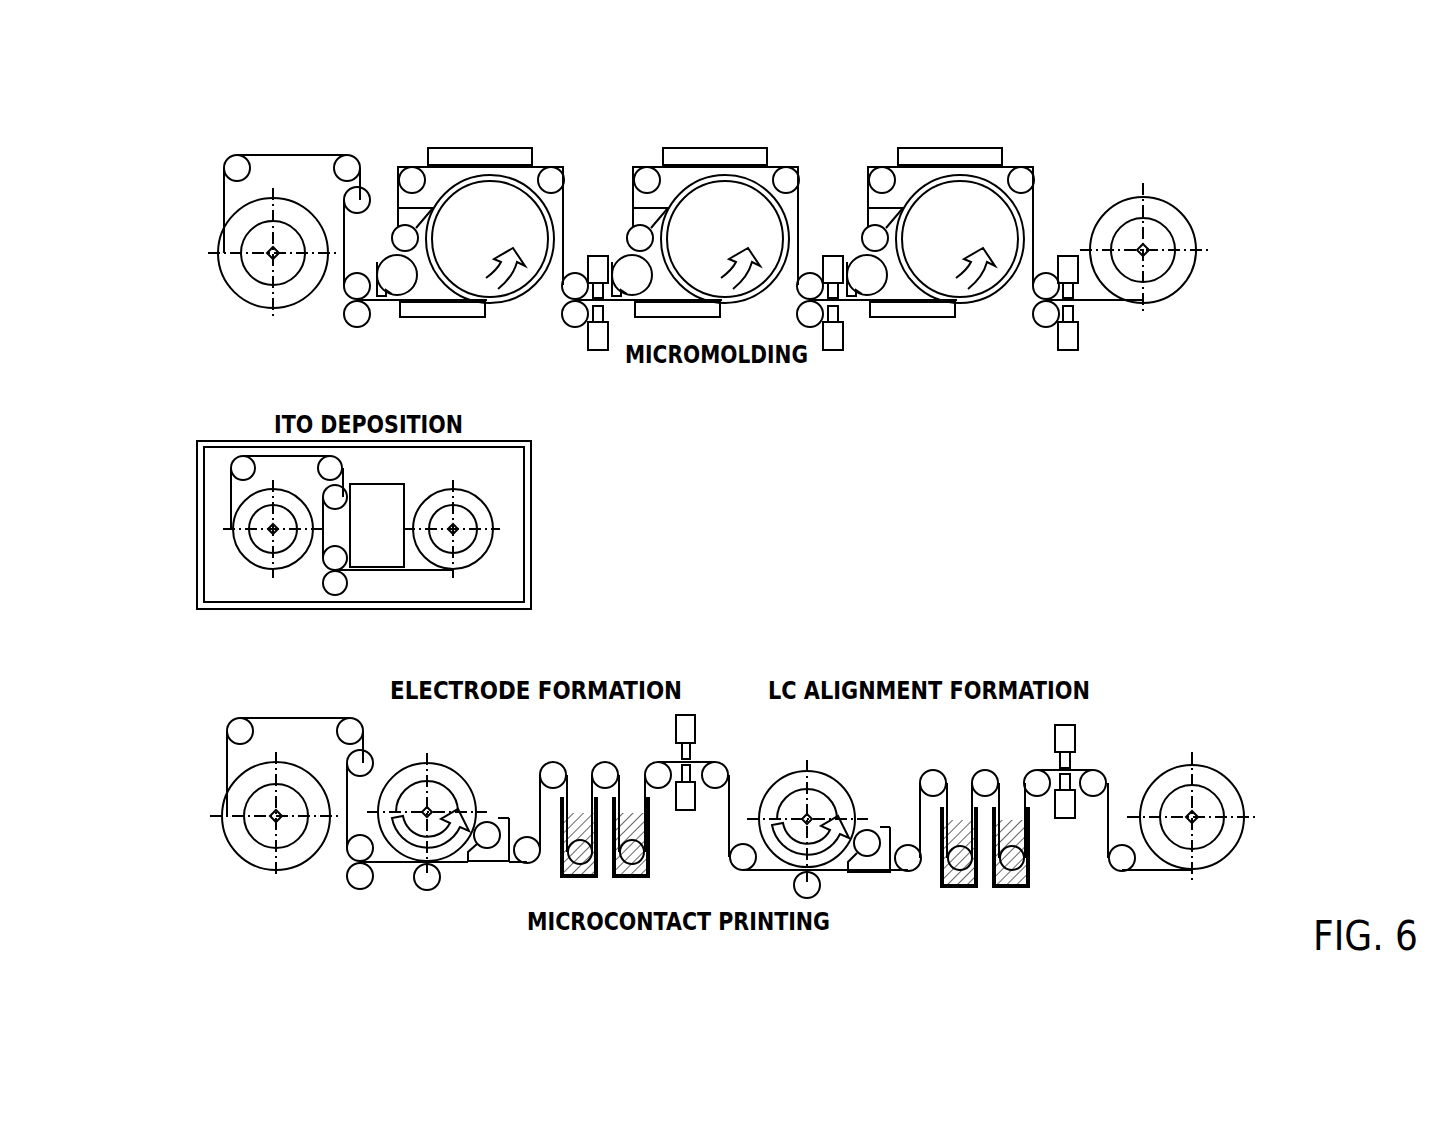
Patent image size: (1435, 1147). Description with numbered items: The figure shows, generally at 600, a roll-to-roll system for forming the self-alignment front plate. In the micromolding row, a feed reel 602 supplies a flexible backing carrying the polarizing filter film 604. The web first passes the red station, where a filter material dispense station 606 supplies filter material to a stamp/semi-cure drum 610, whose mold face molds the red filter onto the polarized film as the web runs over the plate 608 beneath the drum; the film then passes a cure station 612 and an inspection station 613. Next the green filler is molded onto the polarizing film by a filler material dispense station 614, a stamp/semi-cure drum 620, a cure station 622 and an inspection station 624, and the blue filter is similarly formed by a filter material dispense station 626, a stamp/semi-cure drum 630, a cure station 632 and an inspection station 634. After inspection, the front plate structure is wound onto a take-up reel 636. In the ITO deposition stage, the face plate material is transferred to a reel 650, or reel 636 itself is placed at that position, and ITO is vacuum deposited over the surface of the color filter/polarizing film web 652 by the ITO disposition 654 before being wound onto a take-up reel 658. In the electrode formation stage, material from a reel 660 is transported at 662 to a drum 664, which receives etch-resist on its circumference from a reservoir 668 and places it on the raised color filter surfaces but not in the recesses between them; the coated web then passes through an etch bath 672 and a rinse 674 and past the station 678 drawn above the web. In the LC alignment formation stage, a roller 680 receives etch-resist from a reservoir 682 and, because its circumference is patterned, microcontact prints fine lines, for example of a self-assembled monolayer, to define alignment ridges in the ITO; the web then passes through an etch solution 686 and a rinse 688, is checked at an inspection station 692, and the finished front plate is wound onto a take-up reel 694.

The system for forming the self-alignment front plate 600 is at (1299, 131).
The feed reel 602 is at (230, 287).
The polarizing filter film 604 is at (222, 200).
The filter material dispense station 606 is at (382, 260).
The bottom plate 608 is at (437, 302).
The stamp/semi-cure drum 610 is at (532, 228).
The cure station 612 is at (513, 150).
The inspection station 613 is at (602, 352).
The filler material dispense station 614 is at (620, 253).
The stamp/semi-cure drum 620 is at (739, 235).
The cure station 622 is at (735, 137).
The inspection station 624 is at (836, 328).
The filter material dispense station 626 is at (912, 326).
The stamp/semi-cure drum 630 is at (975, 235).
The cure station 632 is at (971, 137).
The inspection station 634 is at (1071, 329).
The take-up reel 636 is at (1190, 280).
The reel 650 is at (237, 550).
The color filter/polarizing film web 652 is at (197, 497).
The ITO disposition 654 is at (403, 487).
The take-up reel 658 is at (493, 543).
The reel 660 is at (233, 850).
The transport 662 is at (226, 763).
The drum 664 is at (460, 777).
The reservoir 668 is at (485, 862).
The etch bath 672 is at (582, 813).
The rinse 674 is at (632, 813).
The dryer 678 is at (695, 735).
The roller 680 is at (840, 790).
The reservoir 682 is at (863, 848).
The etch solution 686 is at (958, 890).
The rinse 688 is at (1011, 890).
The inspection station 692 is at (1097, 725).
The take-up reel 694 is at (1233, 858).